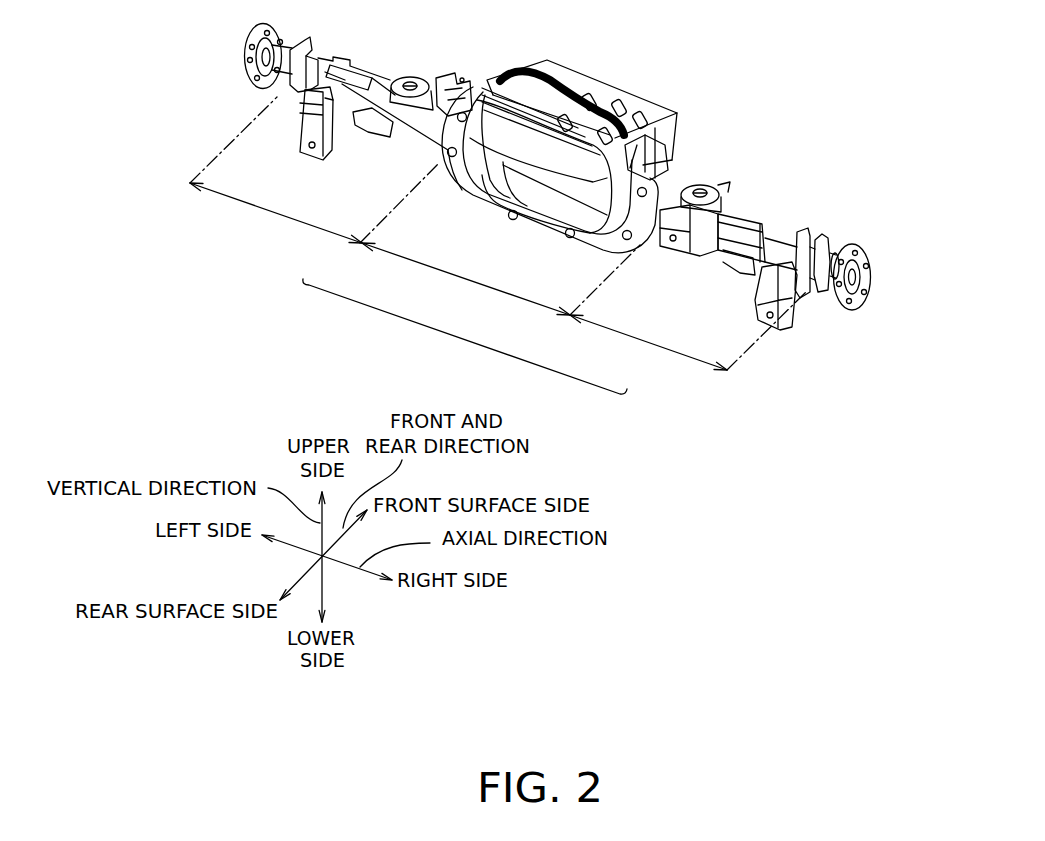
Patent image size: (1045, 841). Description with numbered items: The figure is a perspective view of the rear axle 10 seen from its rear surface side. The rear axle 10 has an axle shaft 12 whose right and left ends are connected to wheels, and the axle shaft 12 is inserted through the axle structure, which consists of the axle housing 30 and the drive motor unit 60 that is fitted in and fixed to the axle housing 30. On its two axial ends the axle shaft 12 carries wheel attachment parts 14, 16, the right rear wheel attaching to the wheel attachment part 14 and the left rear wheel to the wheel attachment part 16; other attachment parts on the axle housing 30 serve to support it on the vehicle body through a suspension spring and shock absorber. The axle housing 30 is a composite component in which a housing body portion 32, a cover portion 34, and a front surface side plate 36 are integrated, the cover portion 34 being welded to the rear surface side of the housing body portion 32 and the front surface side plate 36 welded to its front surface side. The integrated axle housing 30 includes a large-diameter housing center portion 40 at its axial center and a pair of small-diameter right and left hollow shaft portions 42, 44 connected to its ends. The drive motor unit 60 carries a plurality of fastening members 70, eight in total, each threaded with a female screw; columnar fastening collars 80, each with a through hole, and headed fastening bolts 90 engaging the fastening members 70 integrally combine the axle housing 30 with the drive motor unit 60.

The rear axle 10 is at (807, 380).
The axle shaft 12 is at (833, 260).
The wheel attachment part 14 is at (872, 270).
The wheel attachment part 16 is at (245, 62).
The axle housing 30 is at (457, 343).
The housing body portion 32 is at (708, 233).
The cover portion 34 is at (568, 208).
The front surface side plate 36 is at (515, 63).
The housing center portion 40 is at (458, 277).
The hollow shaft portion 42 is at (610, 327).
The hollow shaft portion 44 is at (318, 227).
The drive motor unit 60 is at (602, 75).
The fastening member 70 is at (630, 100).
The fastening collar 80 is at (636, 123).
The fastening bolt 90 is at (643, 157).